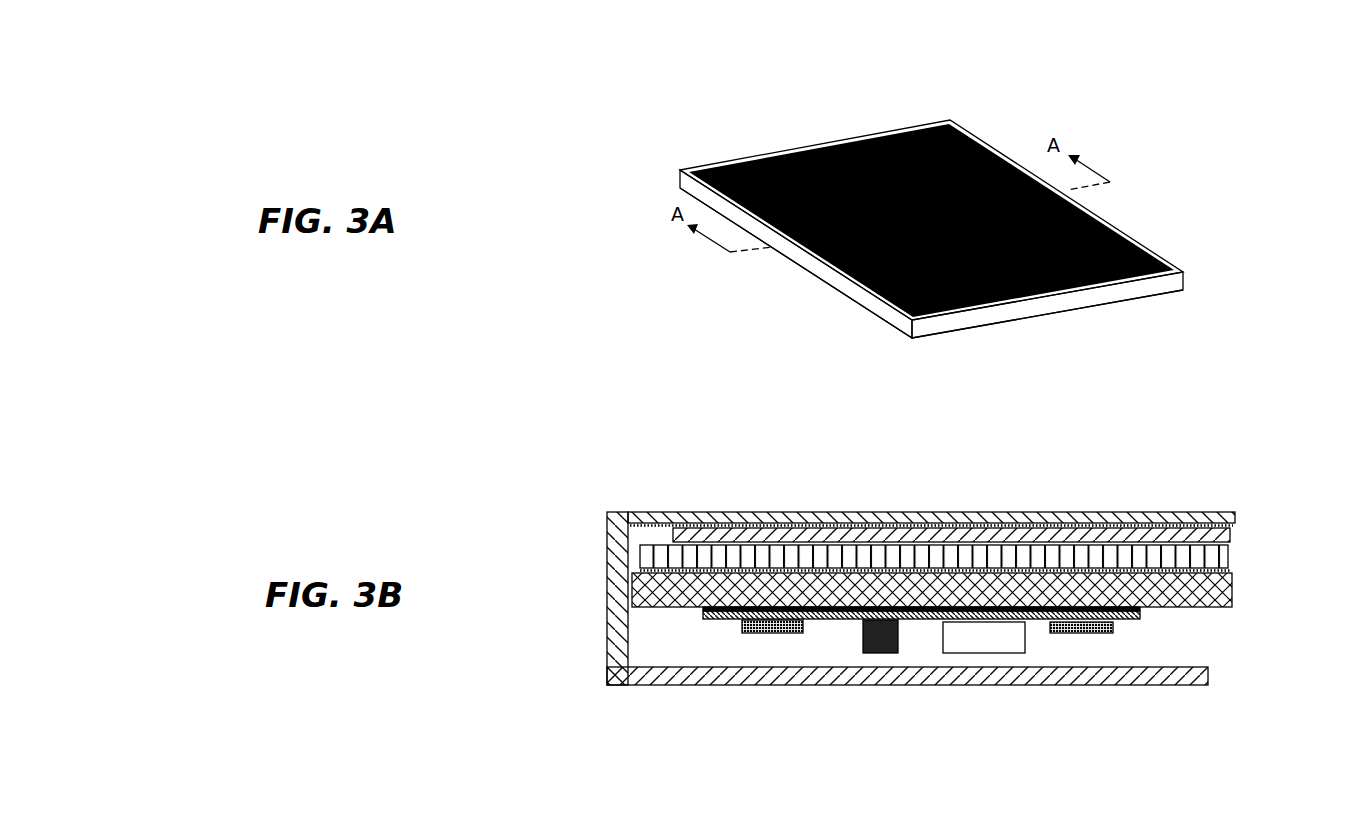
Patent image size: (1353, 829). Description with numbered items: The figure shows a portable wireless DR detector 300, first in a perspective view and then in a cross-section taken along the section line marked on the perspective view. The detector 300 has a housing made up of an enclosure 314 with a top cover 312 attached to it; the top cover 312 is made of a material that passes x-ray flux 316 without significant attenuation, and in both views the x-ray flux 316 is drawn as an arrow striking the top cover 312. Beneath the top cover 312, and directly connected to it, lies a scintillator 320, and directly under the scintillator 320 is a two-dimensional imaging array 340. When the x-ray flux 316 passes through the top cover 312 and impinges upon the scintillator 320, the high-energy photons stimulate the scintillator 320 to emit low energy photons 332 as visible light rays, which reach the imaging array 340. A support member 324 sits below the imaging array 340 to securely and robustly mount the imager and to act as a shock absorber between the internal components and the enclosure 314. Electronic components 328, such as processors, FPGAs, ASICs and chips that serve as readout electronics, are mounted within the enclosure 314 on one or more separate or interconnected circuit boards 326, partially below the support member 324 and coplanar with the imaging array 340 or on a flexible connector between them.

In FIG. 3A, the portable wireless DR detector 300 is at (630, 94).
In FIG. 3B, the portable wireless DR detector 300 is at (536, 442).
In FIG. 3A, the top cover 312 is at (847, 282).
In FIG. 3B, the top cover 312 is at (1158, 508).
In FIG. 3A, the enclosure 314 is at (1015, 313).
In FIG. 3B, the enclosure 314 is at (605, 627).
In FIG. 3A, the x-ray flux 316 is at (893, 180).
In FIG. 3B, the x-ray flux 316 is at (900, 530).
In FIG. 3B, the scintillator 320 is at (1230, 538).
In FIG. 3B, the support member 324 is at (1232, 582).
In FIG. 3B, the circuit boards 326 is at (1128, 625).
In FIG. 3B, the electronic components 328 is at (780, 640).
In FIG. 3B, the low energy photons 332 is at (898, 545).
In FIG. 3B, the two-dimensional imaging array 340 is at (1230, 555).